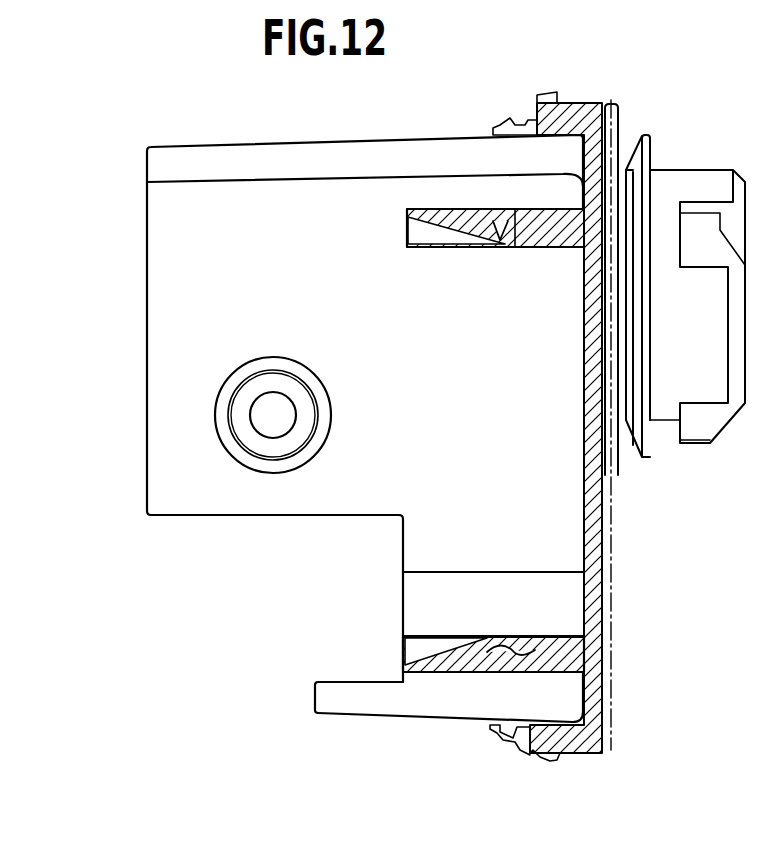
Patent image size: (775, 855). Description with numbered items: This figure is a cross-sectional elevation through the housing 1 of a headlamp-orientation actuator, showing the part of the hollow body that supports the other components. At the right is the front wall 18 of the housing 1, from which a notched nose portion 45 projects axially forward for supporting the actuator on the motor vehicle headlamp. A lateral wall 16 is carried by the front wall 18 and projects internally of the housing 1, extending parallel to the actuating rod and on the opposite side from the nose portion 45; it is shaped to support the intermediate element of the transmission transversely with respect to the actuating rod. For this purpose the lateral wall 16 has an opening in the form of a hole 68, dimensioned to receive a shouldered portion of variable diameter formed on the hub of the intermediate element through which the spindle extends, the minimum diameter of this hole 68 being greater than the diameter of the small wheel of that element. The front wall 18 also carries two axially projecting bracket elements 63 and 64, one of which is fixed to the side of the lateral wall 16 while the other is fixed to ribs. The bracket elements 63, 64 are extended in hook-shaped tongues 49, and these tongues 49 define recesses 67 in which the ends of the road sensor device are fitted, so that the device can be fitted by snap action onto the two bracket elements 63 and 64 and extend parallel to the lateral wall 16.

The housing 1 is at (603, 724).
The lateral wall 16 is at (219, 291).
The front wall 18 is at (602, 475).
The notched nose portion 45 is at (690, 447).
The hook-shaped tongues 49 is at (437, 249).
The bracket element 63 is at (528, 247).
The bracket element 64 is at (538, 622).
The recesses 67 is at (505, 217).
The hole 68 is at (258, 452).